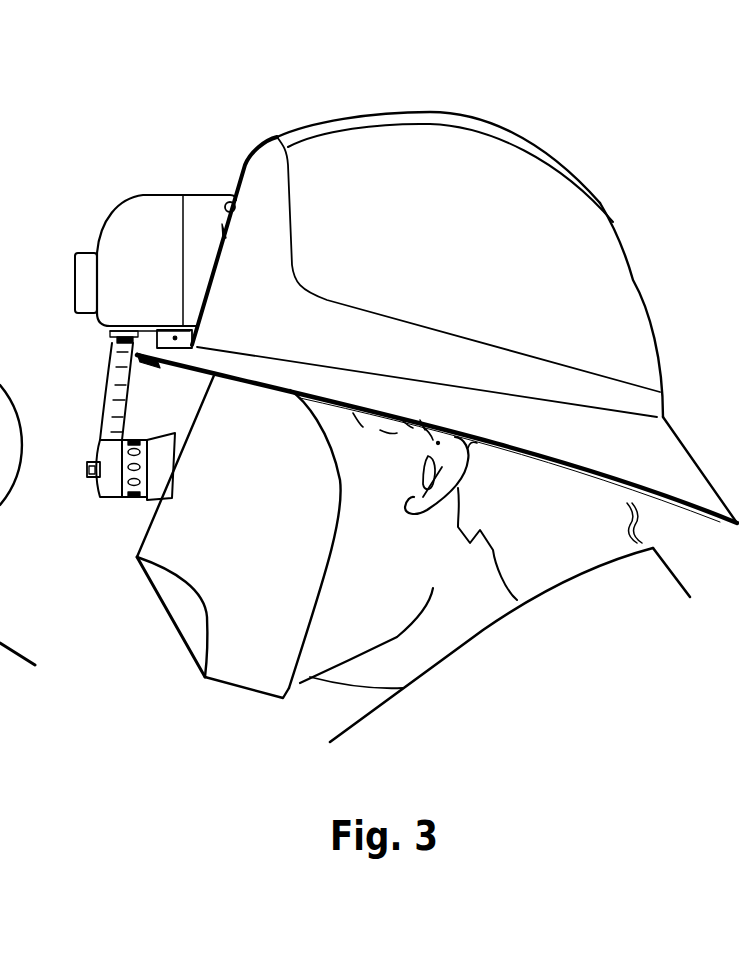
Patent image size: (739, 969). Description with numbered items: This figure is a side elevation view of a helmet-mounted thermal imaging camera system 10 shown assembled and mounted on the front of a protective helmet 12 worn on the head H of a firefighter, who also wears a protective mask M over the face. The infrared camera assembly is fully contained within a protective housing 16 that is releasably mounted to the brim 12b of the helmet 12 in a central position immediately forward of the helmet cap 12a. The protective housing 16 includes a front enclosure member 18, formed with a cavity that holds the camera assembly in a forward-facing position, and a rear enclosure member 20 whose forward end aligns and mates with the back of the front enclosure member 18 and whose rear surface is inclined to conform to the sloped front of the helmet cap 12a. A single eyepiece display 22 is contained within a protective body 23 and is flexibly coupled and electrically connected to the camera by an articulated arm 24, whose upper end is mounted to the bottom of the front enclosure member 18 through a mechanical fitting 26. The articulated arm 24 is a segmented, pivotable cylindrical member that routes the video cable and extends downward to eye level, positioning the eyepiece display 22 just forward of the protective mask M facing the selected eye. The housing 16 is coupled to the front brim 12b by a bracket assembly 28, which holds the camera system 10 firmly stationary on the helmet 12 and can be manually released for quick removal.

The thermal imaging camera system 10 is at (77, 245).
The protective helmet 12 is at (617, 207).
The helmet cap 12a is at (277, 137).
The brim 12b is at (163, 365).
The protective housing 16 is at (181, 186).
The front enclosure member 18 is at (123, 207).
The rear enclosure member 20 is at (218, 190).
The single eyepiece display 22 is at (86, 490).
The protective body 23 is at (132, 500).
The articulated arm 24 is at (110, 410).
The mechanical fitting 26 is at (110, 333).
The bracket assembly 28 is at (155, 335).
The protective mask M is at (172, 623).
The head H is at (312, 685).